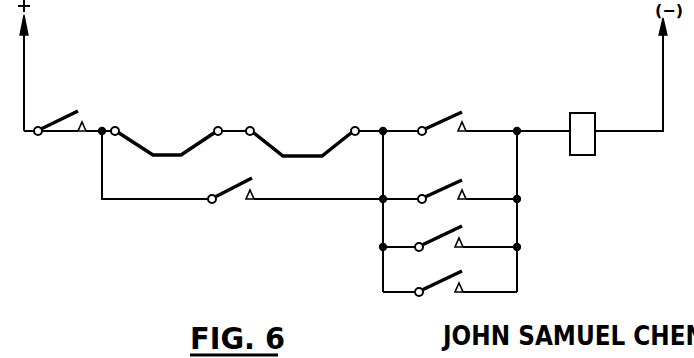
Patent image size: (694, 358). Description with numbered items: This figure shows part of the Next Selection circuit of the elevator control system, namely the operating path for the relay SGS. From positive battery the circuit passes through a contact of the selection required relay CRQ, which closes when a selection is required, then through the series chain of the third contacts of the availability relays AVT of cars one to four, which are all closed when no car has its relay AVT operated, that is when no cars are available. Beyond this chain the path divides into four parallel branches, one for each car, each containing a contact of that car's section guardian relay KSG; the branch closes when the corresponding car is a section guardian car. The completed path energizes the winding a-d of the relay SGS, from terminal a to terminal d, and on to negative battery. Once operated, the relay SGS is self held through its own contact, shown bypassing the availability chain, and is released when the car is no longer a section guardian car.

The relay SGS is at (577, 118).
The winding terminal a is at (561, 125).
The winding terminal d is at (603, 125).